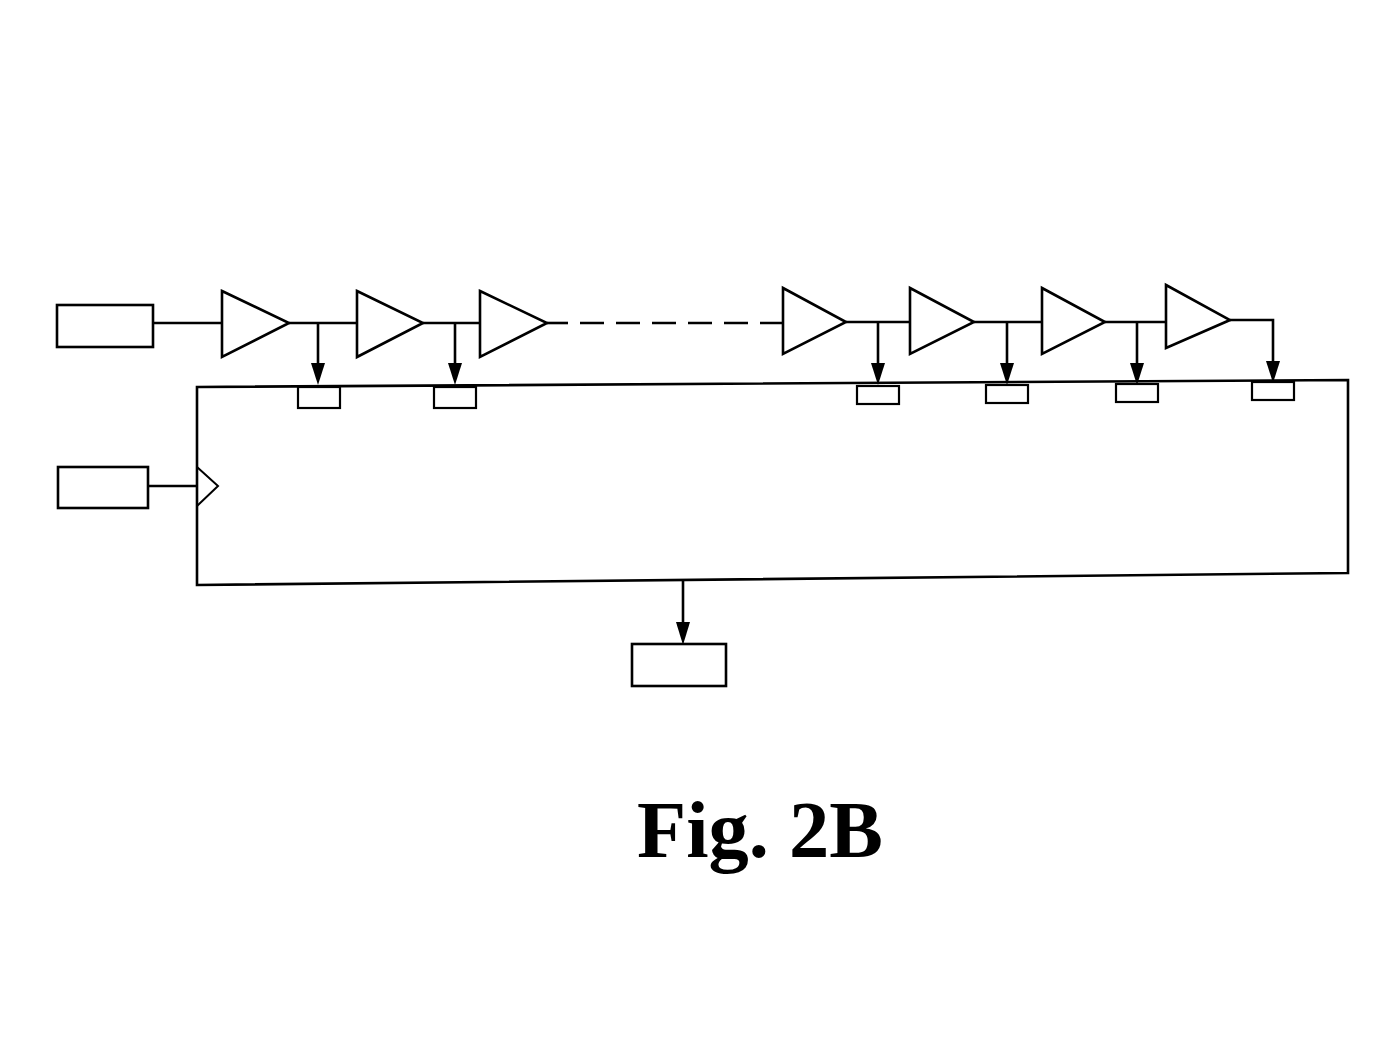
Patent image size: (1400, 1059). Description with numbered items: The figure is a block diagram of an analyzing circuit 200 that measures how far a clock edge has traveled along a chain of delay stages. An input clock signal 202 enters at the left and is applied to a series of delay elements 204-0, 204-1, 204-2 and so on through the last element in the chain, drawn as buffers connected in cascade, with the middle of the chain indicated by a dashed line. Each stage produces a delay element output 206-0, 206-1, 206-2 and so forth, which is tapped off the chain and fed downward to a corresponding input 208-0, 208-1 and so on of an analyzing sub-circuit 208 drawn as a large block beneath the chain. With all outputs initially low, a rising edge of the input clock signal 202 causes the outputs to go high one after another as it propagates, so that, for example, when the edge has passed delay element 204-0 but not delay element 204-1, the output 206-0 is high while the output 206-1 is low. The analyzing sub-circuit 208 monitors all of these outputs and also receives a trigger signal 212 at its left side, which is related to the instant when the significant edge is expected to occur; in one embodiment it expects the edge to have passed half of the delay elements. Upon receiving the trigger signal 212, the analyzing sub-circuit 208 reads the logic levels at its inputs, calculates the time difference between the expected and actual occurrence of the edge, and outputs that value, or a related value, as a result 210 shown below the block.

The analyzing circuit 200 is at (997, 132).
The input clock signal 202 is at (130, 305).
The delay element 204-0 is at (248, 292).
The delay element 204-1 is at (366, 290).
The delay element 204-2 is at (492, 290).
The delay element output 206-0 is at (302, 321).
The delay element output 206-1 is at (440, 321).
The delay element output 206-2 is at (570, 321).
The analyzing sub-circuit 208 is at (772, 482).
The input of analyzing sub-circuit 208-0 is at (341, 386).
The input of analyzing sub-circuit 208-1 is at (468, 386).
The result 210 is at (728, 666).
The trigger signal 212 is at (127, 467).